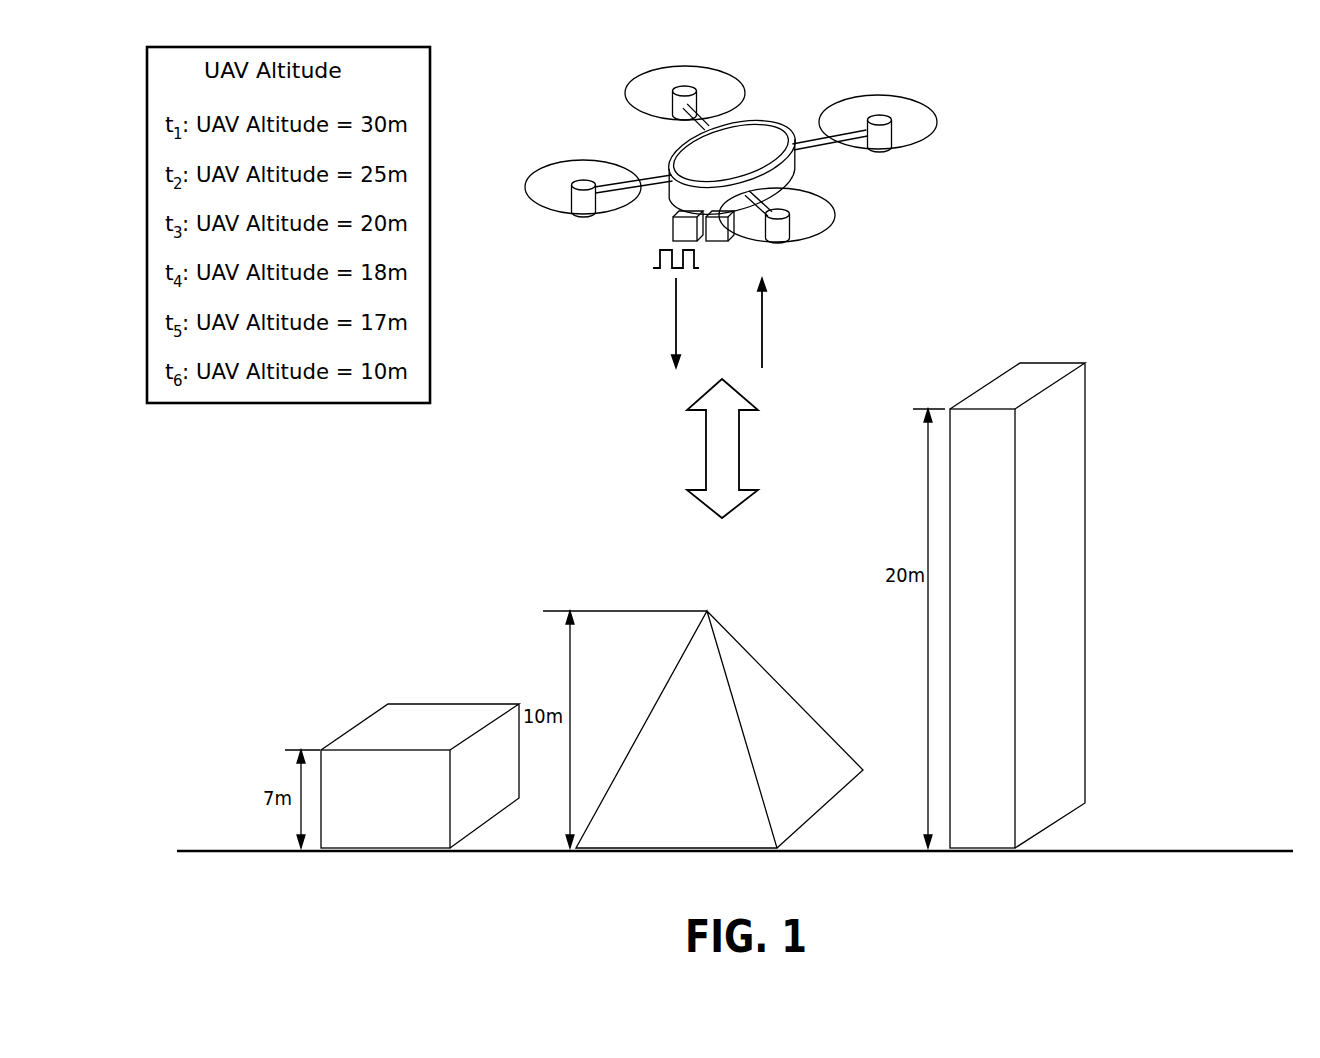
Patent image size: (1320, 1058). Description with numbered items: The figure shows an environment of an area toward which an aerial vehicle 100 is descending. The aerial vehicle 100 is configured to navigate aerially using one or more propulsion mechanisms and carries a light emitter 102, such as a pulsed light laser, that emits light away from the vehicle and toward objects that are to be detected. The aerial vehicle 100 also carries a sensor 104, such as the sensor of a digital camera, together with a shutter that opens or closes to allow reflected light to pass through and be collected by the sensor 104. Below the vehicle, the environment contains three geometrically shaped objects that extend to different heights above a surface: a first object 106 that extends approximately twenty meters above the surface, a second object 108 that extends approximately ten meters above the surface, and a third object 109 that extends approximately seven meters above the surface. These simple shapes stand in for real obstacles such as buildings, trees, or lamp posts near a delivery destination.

The aerial vehicle 100 is at (731, 154).
The light emitter 102 is at (682, 226).
The sensor 104 is at (715, 233).
The first object 106 is at (984, 822).
The second object 108 is at (700, 823).
The third object 109 is at (393, 823).